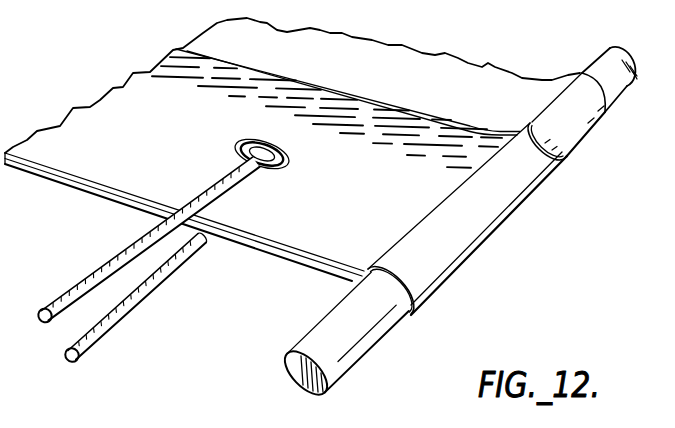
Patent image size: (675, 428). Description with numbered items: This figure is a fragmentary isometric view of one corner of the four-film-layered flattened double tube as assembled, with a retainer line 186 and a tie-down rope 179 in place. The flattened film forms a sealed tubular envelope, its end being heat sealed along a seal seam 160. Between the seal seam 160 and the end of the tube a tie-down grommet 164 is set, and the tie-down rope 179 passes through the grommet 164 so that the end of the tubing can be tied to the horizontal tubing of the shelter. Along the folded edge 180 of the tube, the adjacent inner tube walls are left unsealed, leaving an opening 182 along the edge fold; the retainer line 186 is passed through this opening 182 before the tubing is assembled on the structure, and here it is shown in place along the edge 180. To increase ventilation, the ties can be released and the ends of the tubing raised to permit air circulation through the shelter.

The seal seam 160 is at (429, 80).
The tie-down grommet 164 is at (290, 150).
The tie-down rope 179 is at (126, 250).
The opening 182 is at (360, 276).
The edge 180 is at (457, 224).
The retainer line 186 is at (372, 347).